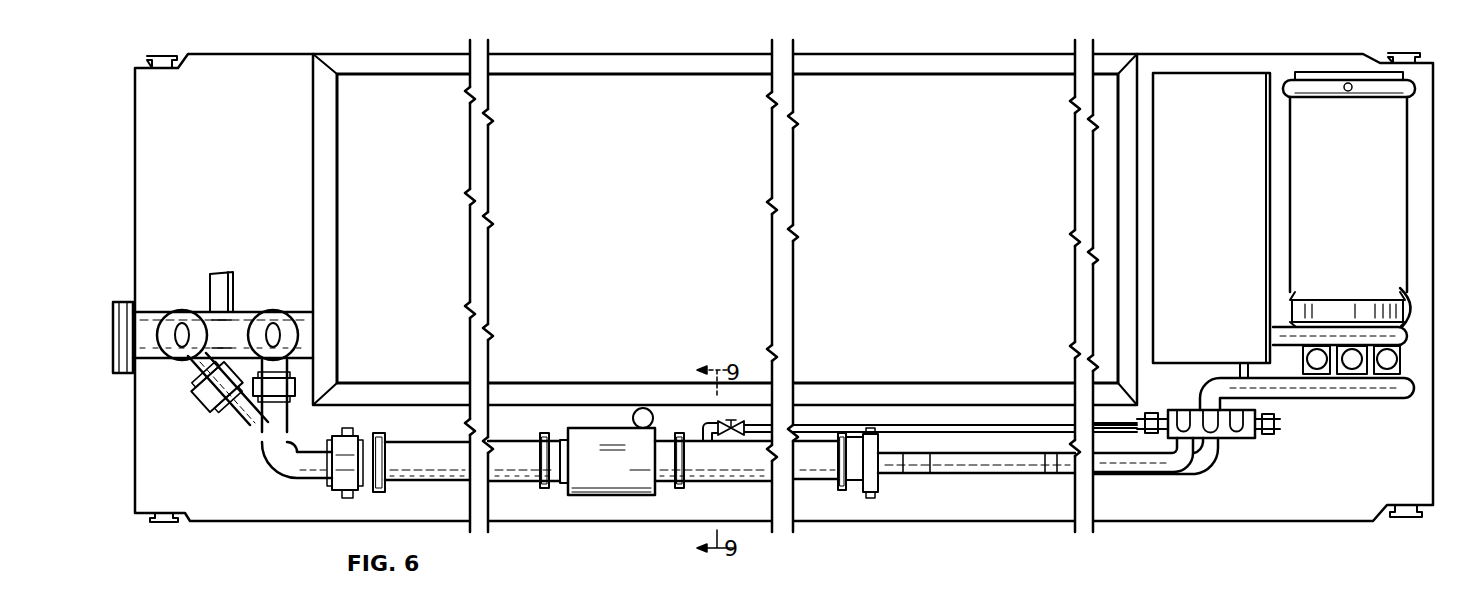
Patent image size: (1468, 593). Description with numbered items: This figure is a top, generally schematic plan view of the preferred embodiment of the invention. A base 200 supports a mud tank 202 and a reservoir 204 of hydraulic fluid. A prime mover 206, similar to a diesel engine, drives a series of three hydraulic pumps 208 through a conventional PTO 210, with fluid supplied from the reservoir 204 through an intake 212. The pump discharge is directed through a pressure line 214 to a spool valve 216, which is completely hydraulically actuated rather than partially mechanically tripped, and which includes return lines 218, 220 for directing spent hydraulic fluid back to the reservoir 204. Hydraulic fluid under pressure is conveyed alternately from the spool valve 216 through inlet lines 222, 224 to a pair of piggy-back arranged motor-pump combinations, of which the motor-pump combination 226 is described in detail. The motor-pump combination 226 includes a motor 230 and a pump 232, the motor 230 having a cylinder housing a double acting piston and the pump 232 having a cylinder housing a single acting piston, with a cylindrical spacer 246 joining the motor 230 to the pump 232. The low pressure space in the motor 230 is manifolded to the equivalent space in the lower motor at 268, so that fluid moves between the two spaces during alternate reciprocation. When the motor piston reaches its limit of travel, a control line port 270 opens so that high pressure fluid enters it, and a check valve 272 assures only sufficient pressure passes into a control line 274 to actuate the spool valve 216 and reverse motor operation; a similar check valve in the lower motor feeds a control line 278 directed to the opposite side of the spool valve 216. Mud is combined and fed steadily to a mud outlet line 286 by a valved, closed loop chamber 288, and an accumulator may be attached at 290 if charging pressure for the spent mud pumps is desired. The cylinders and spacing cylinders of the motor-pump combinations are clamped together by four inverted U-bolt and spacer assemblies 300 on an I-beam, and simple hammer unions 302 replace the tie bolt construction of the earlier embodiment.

The base 200 is at (1300, 510).
The mud tank 202 is at (592, 131).
The reservoir 204 is at (1183, 135).
The prime mover 206 is at (1325, 140).
The hydraulic pumps 208 is at (1320, 372).
The PTO 210 is at (1336, 305).
The intake 212 is at (1408, 297).
The pressure line 214 is at (1398, 398).
The spool valve 216 is at (1255, 438).
The return line 218 is at (1142, 424).
The return line 220 is at (1245, 380).
The inlet line 222 is at (1152, 482).
The inlet line 224 is at (1222, 478).
The motor-pump combination 226 is at (604, 523).
The motor 230 is at (802, 472).
The pump 232 is at (452, 466).
The cylindrical spacer 246 is at (593, 432).
The manifold connection 268 is at (643, 408).
The control line port 270 is at (710, 428).
The check valve 272 is at (729, 420).
The control line 274 is at (958, 426).
The control line 278 is at (1280, 425).
The mud outlet line 286 is at (235, 283).
The closed loop chamber 288 is at (196, 318).
The accumulator attachment point 290 is at (118, 314).
The inverted U-bolt and spacer assemblies 300 is at (380, 493).
The hammer unions 302 is at (243, 395).